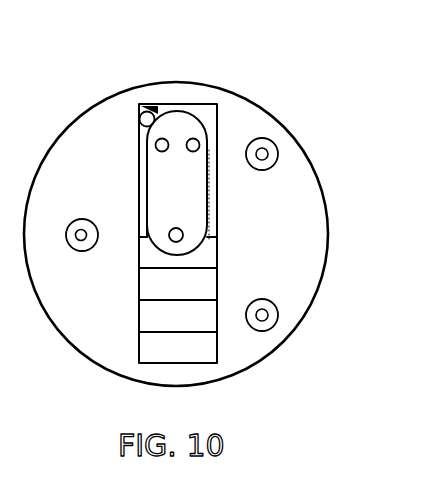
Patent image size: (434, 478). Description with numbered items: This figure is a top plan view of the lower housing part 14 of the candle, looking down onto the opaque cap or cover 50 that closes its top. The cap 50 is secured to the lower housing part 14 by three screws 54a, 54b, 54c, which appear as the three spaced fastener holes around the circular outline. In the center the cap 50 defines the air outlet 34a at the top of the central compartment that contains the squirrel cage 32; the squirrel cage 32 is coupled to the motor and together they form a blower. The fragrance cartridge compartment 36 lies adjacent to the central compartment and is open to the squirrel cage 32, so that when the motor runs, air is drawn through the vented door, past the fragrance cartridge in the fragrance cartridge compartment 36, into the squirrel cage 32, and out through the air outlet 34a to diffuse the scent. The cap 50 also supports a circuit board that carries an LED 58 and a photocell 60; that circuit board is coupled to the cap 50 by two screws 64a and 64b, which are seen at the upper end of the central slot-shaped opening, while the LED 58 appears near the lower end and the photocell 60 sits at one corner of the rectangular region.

The lower housing part 14 is at (307, 151).
The cap 50 is at (289, 214).
The squirrel cage 32 is at (190, 313).
The air outlet 34a is at (140, 312).
The fragrance cartridge compartment 36 is at (150, 180).
The LED 58 is at (183, 231).
The photocell 60 is at (148, 111).
The screw 64a is at (162, 137).
The screw 64b is at (193, 137).
The screw 54a is at (90, 197).
The screw 54b is at (278, 322).
The screw 54c is at (264, 143).